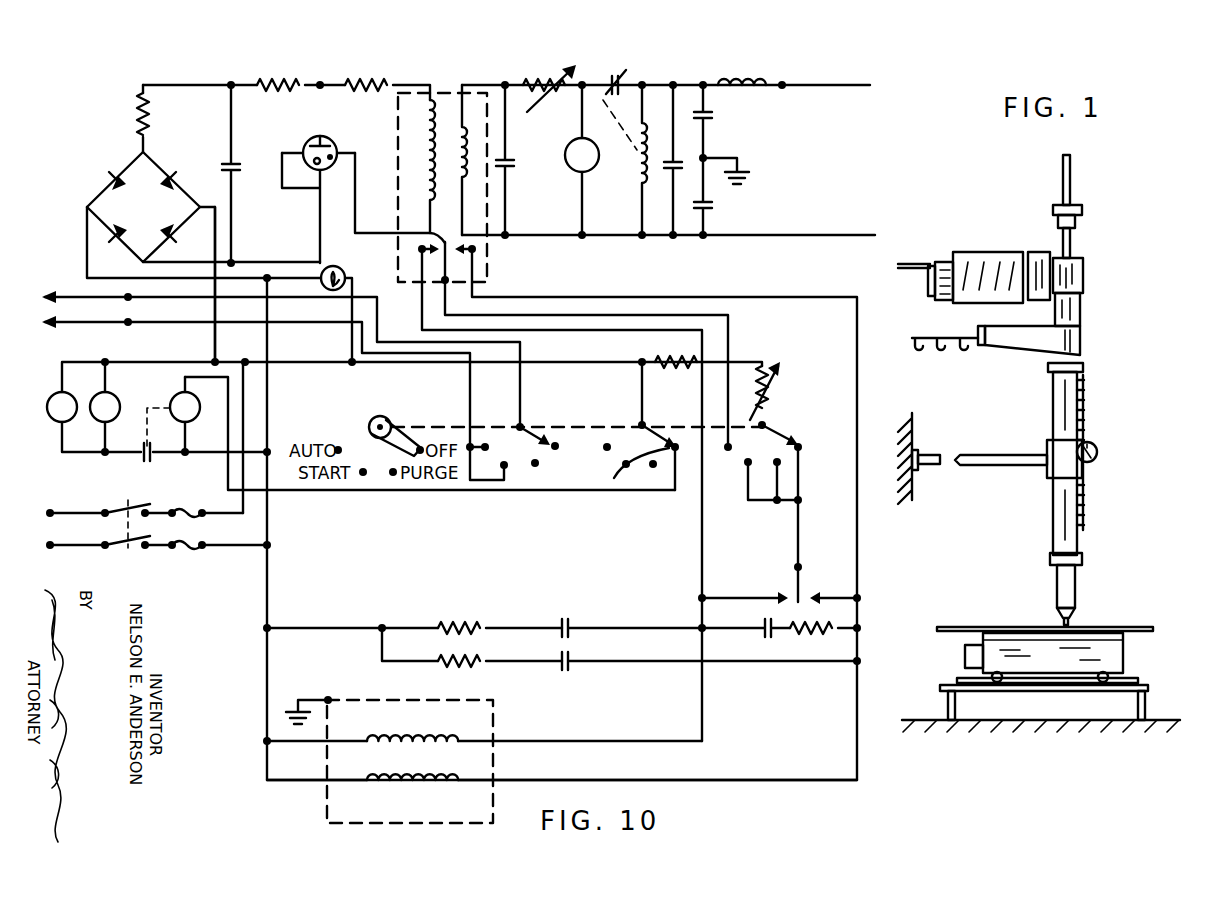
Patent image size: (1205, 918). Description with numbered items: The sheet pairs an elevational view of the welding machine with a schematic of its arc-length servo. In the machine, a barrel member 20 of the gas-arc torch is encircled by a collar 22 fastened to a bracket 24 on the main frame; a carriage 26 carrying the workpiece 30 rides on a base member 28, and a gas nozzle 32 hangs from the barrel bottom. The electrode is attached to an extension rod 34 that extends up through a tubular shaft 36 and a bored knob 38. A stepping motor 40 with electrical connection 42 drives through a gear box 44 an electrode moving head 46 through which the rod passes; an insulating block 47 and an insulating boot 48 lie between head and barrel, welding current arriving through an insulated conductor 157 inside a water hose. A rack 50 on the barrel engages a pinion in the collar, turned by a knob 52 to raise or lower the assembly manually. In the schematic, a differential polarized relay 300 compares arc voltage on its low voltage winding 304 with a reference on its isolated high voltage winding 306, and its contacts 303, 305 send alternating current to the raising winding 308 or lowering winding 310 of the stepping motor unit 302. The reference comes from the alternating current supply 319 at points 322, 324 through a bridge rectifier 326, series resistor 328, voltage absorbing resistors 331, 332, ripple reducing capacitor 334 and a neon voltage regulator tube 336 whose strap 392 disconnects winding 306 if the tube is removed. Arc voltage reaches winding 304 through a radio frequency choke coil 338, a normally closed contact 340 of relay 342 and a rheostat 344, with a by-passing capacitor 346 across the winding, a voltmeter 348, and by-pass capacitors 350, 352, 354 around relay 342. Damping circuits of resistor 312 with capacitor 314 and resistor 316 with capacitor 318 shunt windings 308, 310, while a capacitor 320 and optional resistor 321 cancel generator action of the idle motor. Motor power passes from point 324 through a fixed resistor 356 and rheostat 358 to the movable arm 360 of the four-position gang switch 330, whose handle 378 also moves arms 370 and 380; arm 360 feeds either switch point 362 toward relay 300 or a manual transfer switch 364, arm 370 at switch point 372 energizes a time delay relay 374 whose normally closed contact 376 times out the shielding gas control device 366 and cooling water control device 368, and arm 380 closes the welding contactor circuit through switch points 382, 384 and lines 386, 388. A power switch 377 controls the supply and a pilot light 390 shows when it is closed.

In FIG. 1, the barrel member 20 is at (1058, 510).
In FIG. 1, the collar 22 is at (1058, 462).
In FIG. 1, the bracket 24 is at (980, 455).
In FIG. 1, the carriage 26 is at (1125, 660).
In FIG. 1, the base member 28 is at (1140, 711).
In FIG. 1, the workpiece 30 is at (1125, 628).
In FIG. 1, the gas nozzle 32 is at (1078, 590).
In FIG. 1, the extension rod 34 is at (1071, 180).
In FIG. 1, the shaft 36 is at (1075, 234).
In FIG. 1, the knob 38 is at (1052, 220).
In FIG. 1, the stepping motor 40 is at (960, 296).
In FIG. 1, the electrical connection 42 is at (932, 262).
In FIG. 1, the gear box 44 is at (1040, 296).
In FIG. 1, the electrode moving head 46 is at (1084, 275).
In FIG. 1, the insulating block 47 is at (1082, 310).
In FIG. 1, the insulating boot 48 is at (1085, 340).
In FIG. 1, the rack 50 is at (1084, 395).
In FIG. 1, the knob 52 is at (1097, 452).
In FIG. 1, the insulated conductor 157 is at (919, 355).
In FIG. 10, the differential polarized relay 300 is at (488, 262).
In FIG. 10, the stepping motor unit 302 is at (495, 718).
In FIG. 10, the relay contact 303 is at (425, 235).
In FIG. 10, the low voltage winding 304 is at (466, 140).
In FIG. 10, the relay contact 305 is at (480, 242).
In FIG. 10, the high voltage winding 306 is at (426, 135).
In FIG. 10, the operating winding 308 is at (449, 714).
In FIG. 10, the operating winding 310 is at (401, 782).
In FIG. 10, the resistor 312 is at (468, 622).
In FIG. 10, the capacitor 314 is at (567, 620).
In FIG. 10, the resistor 316 is at (460, 668).
In FIG. 10, the capacitor 318 is at (571, 668).
In FIG. 10, the alternating current supply 319 is at (70, 530).
In FIG. 10, the capacitor 320 is at (762, 630).
In FIG. 10, the resistor 321 is at (793, 632).
In FIG. 10, the common connection point 322 is at (264, 550).
In FIG. 10, the power line point 324 is at (258, 347).
In FIG. 10, the bridge-type rectifier 326 is at (163, 204).
In FIG. 10, the series resistor 328 is at (150, 104).
In FIG. 10, the gang switch 330 is at (609, 404).
In FIG. 10, the voltage absorbing resistor 331 is at (253, 88).
In FIG. 10, the voltage absorbing resistor 332 is at (336, 88).
In FIG. 10, the ripple reducing capacitor 334 is at (235, 171).
In FIG. 10, the voltage regulator tube 336 is at (332, 148).
In FIG. 10, the radio frequency choke coil 338 is at (750, 92).
In FIG. 10, the normally closed contact 340 is at (604, 98).
In FIG. 10, the relay 342 is at (644, 158).
In FIG. 10, the rheostat 344 is at (530, 88).
In FIG. 10, the by-passing capacitor 346 is at (510, 160).
In FIG. 10, the voltmeter 348 is at (586, 174).
In FIG. 10, the radio frequency by-pass capacitor 350 is at (686, 160).
In FIG. 10, the radio frequency by-pass condenser 352 is at (712, 118).
In FIG. 10, the radio frequency by-pass condenser 354 is at (712, 204).
In FIG. 10, the fixed resistor 356 is at (685, 359).
In FIG. 10, the rheostat 358 is at (771, 392).
In FIG. 10, the movable arm 360 is at (781, 437).
In FIG. 10, the switch point 362 is at (728, 447).
In FIG. 10, the manual transfer switch 364 is at (808, 598).
In FIG. 10, the control device 366 is at (70, 393).
In FIG. 10, the control device 368 is at (118, 412).
In FIG. 10, the movable arm 370 is at (652, 424).
In FIG. 10, the switch point 372 is at (630, 468).
In FIG. 10, the time delay relay 374 is at (193, 414).
In FIG. 10, the normally closed contact 376 is at (153, 462).
In FIG. 10, the switch 377 is at (120, 536).
In FIG. 10, the operating handle 378 is at (420, 396).
In FIG. 10, the third arm 380 is at (529, 434).
In FIG. 10, the switch point 382 is at (504, 483).
In FIG. 10, the switch point 384 is at (480, 442).
In FIG. 10, the line 386 is at (280, 322).
In FIG. 10, the line 388 is at (281, 297).
In FIG. 10, the pilot light 390 is at (339, 268).
In FIG. 10, the strap 392 is at (297, 147).